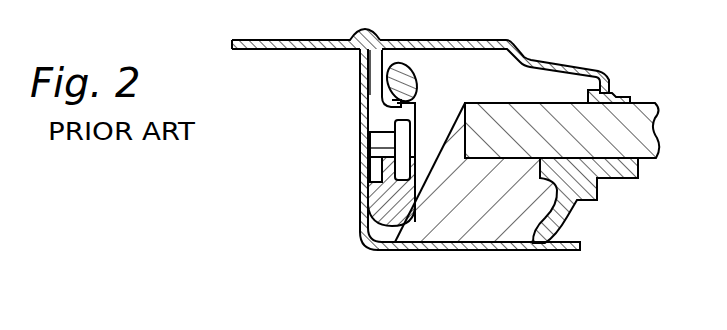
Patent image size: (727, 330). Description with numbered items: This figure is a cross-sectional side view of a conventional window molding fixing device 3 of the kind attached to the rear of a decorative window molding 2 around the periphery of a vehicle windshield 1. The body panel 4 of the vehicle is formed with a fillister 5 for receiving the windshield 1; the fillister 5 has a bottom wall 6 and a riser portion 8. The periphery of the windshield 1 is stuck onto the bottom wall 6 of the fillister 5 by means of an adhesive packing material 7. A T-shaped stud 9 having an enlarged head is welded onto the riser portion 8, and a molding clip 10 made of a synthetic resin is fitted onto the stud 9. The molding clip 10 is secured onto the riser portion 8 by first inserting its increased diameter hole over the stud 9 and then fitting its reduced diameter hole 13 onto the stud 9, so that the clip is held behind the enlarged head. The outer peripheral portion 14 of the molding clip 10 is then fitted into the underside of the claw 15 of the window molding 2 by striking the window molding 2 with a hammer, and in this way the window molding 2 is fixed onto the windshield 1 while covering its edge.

The windshield 1 is at (650, 102).
The window molding 2 is at (508, 42).
The window molding fixing device 3 is at (438, 84).
The body panel 4 is at (266, 40).
The fillister 5 is at (356, 246).
The bottom wall 6 is at (481, 246).
The adhesive packing material 7 is at (512, 230).
The riser portion 8 is at (361, 199).
The T-shaped stud 9 is at (372, 143).
The molding clip 10 is at (370, 219).
The reduced diameter hole 13 is at (368, 157).
The outer peripheral portion 14 is at (378, 106).
The claw 15 is at (398, 78).